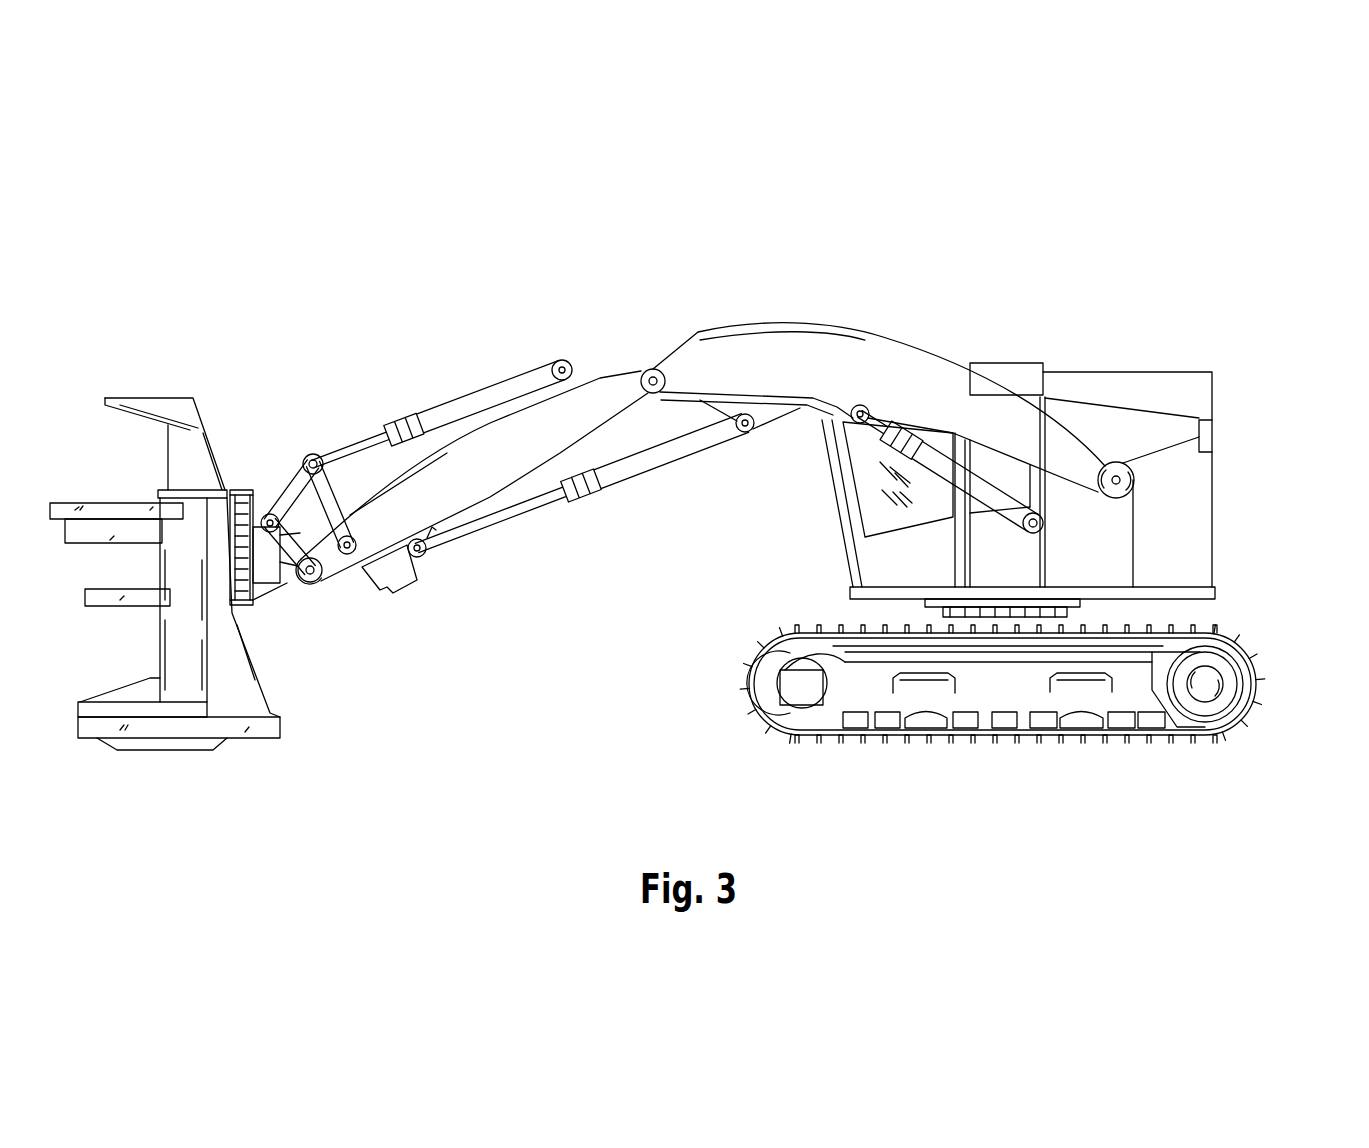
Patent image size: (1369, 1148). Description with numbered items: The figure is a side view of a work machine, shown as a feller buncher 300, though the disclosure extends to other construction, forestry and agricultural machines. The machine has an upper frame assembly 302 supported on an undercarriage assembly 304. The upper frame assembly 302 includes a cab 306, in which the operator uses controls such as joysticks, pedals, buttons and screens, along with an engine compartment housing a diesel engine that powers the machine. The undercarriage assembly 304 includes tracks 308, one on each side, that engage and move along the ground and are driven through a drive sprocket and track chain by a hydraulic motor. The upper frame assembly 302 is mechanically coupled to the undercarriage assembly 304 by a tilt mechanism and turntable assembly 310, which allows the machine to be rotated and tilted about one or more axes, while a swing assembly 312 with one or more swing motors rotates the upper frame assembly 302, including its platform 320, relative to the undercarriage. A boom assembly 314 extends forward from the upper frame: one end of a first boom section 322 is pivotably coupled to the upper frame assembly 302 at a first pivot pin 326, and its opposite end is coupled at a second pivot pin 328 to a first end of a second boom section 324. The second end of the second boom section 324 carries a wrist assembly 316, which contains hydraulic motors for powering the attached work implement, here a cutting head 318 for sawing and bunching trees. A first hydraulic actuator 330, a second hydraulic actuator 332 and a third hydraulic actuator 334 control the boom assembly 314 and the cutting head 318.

The feller buncher 300 is at (1081, 204).
The upper frame assembly 302 is at (1246, 394).
The undercarriage assembly 304 is at (1269, 736).
The cab 306 is at (814, 489).
The tracks 308 is at (742, 685).
The tilt mechanism and turntable assembly 310 is at (926, 617).
The swing assembly 312 is at (1097, 605).
The boom assembly 314 is at (764, 285).
The wrist assembly 316 is at (279, 608).
The cutting head 318 is at (178, 452).
The platform 320 is at (1200, 585).
The first boom section 322 is at (868, 340).
The second boom section 324 is at (543, 425).
The first pivot pin 326 is at (1120, 470).
The second pivot pin 328 is at (645, 368).
The first hydraulic actuator 330 is at (933, 457).
The second hydraulic actuator 332 is at (620, 470).
The third hydraulic actuator 334 is at (432, 420).